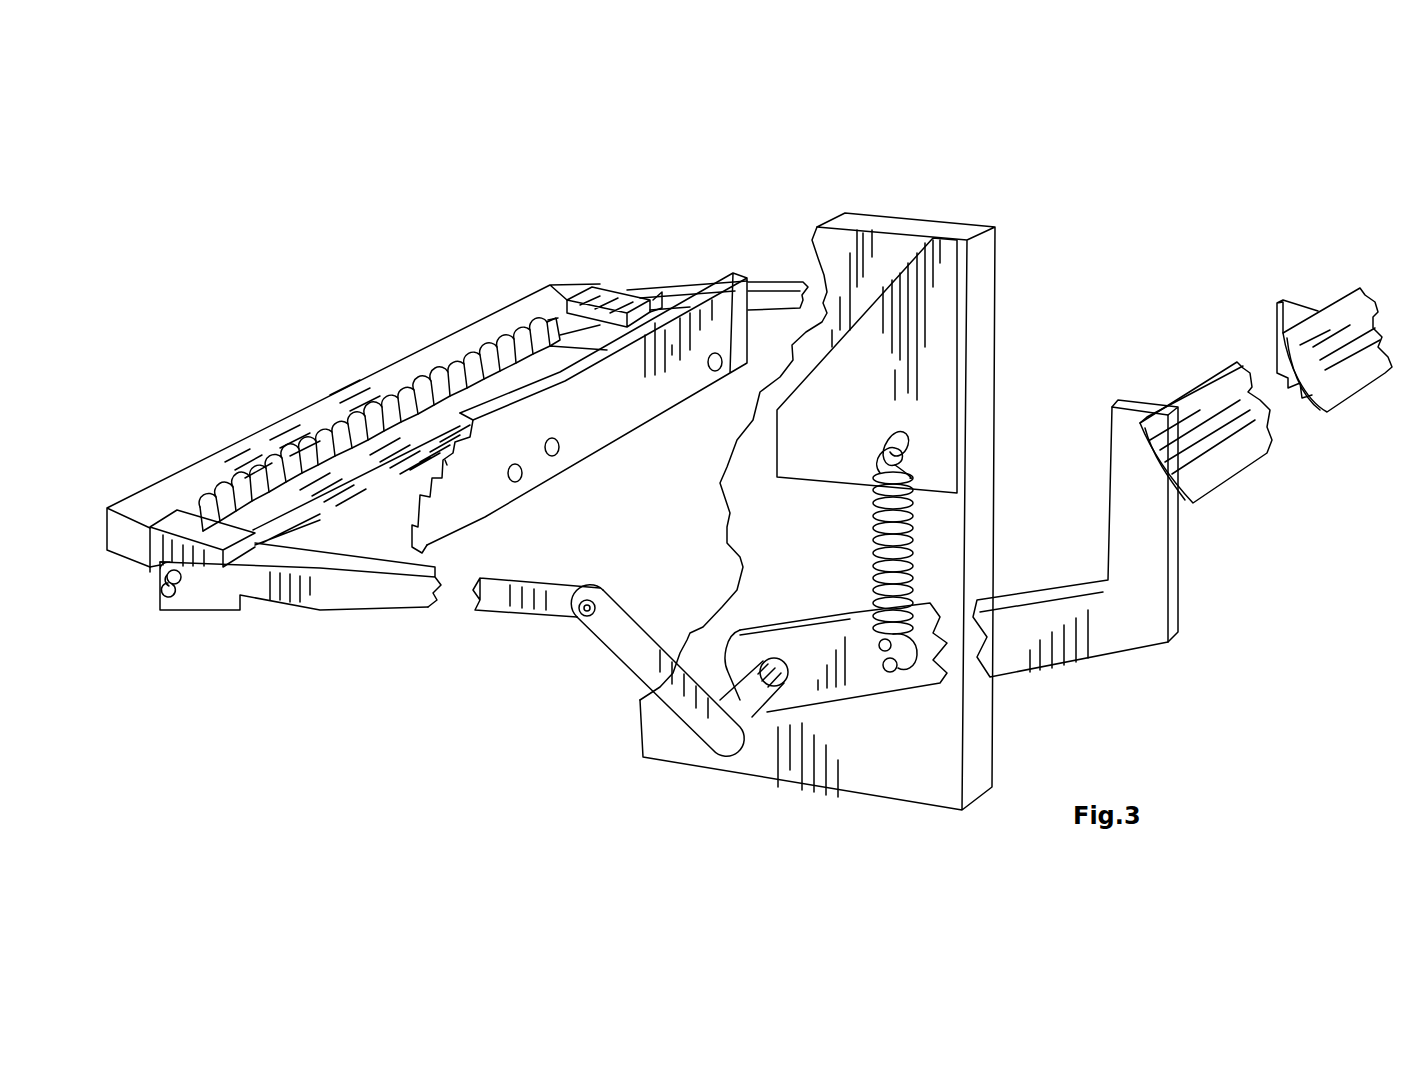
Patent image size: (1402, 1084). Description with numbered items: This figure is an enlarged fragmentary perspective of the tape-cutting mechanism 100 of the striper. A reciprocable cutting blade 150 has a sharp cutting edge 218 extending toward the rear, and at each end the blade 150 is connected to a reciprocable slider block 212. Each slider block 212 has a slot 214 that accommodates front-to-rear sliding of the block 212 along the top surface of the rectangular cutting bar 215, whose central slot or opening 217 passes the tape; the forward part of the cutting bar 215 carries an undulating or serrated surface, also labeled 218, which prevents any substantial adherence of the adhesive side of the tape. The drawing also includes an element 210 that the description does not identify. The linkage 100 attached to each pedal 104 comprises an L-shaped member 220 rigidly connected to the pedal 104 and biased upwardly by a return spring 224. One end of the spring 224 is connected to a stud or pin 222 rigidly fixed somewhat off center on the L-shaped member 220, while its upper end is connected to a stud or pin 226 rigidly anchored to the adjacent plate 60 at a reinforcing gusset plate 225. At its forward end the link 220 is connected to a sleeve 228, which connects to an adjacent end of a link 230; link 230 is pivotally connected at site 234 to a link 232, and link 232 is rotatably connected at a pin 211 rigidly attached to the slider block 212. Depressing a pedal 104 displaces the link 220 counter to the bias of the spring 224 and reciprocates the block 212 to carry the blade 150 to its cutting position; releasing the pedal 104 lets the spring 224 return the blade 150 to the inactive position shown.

The plate 60 is at (836, 238).
The tape-cutting mechanism 100 is at (416, 724).
The pedal 104 is at (1352, 384).
The reciprocable cutting blade 150 is at (335, 505).
The base 210 is at (265, 440).
The pin 211 is at (160, 590).
The reciprocable slider block 212 is at (603, 292).
The slot 214 is at (570, 335).
The cutting bar 215 is at (258, 445).
The central slot 217 is at (447, 465).
The cutting edge 218 is at (353, 453).
The L-shaped member 220 is at (1090, 640).
The pin 222 is at (885, 670).
The spring 224 is at (880, 530).
The reinforcing gusset plate 225 is at (950, 308).
The pin 226 is at (888, 445).
The sleeve 228 is at (742, 712).
The link 230 is at (632, 645).
The link 232 is at (767, 297).
The pivot site 234 is at (588, 600).